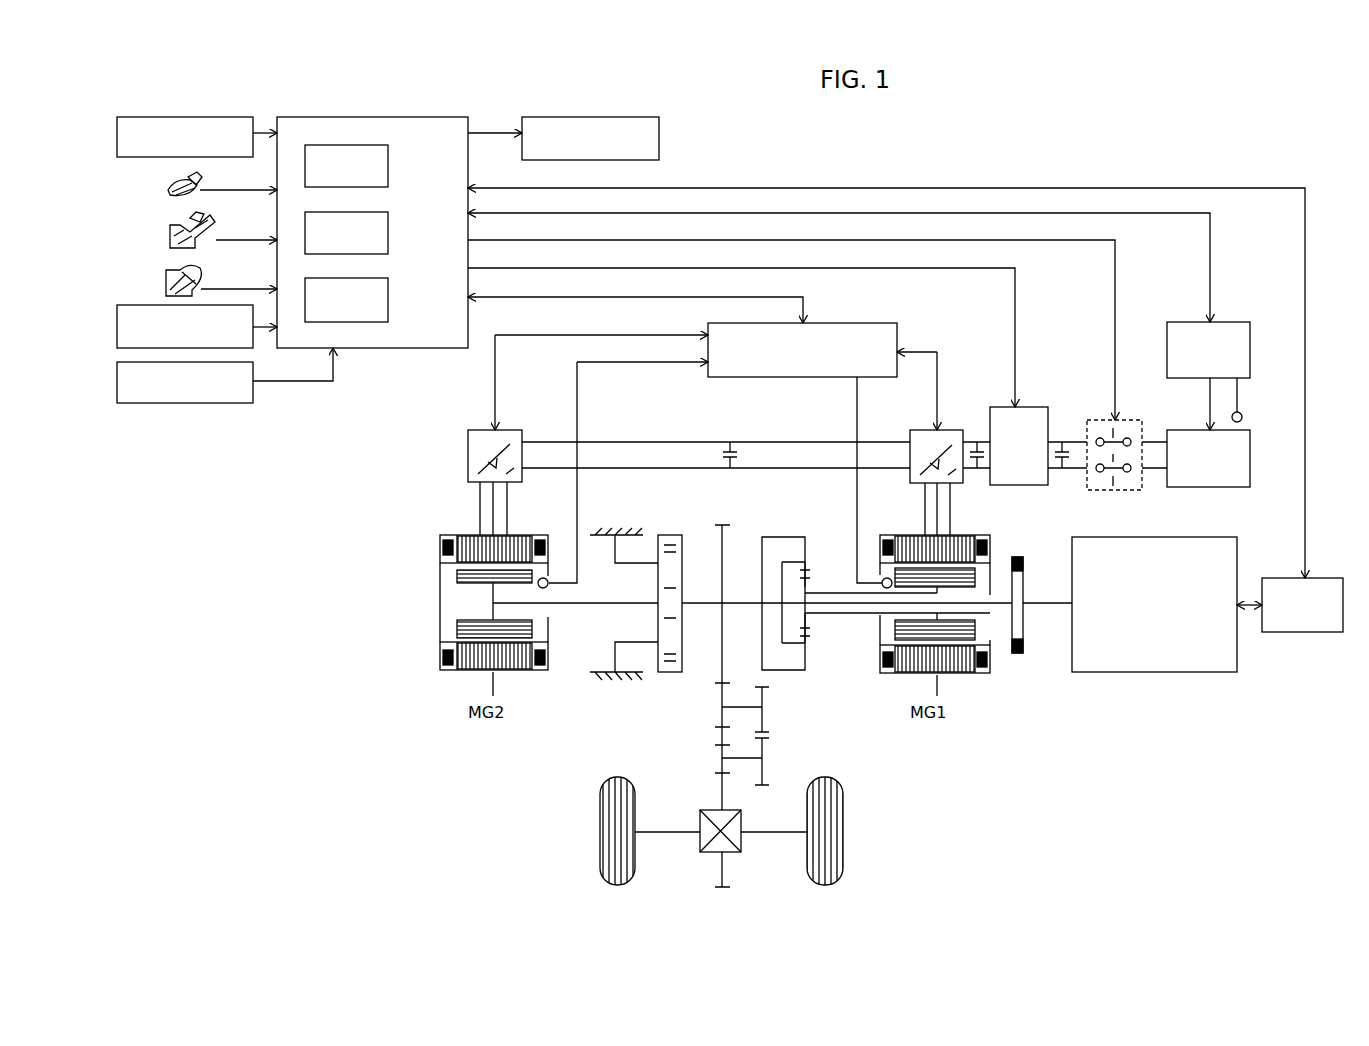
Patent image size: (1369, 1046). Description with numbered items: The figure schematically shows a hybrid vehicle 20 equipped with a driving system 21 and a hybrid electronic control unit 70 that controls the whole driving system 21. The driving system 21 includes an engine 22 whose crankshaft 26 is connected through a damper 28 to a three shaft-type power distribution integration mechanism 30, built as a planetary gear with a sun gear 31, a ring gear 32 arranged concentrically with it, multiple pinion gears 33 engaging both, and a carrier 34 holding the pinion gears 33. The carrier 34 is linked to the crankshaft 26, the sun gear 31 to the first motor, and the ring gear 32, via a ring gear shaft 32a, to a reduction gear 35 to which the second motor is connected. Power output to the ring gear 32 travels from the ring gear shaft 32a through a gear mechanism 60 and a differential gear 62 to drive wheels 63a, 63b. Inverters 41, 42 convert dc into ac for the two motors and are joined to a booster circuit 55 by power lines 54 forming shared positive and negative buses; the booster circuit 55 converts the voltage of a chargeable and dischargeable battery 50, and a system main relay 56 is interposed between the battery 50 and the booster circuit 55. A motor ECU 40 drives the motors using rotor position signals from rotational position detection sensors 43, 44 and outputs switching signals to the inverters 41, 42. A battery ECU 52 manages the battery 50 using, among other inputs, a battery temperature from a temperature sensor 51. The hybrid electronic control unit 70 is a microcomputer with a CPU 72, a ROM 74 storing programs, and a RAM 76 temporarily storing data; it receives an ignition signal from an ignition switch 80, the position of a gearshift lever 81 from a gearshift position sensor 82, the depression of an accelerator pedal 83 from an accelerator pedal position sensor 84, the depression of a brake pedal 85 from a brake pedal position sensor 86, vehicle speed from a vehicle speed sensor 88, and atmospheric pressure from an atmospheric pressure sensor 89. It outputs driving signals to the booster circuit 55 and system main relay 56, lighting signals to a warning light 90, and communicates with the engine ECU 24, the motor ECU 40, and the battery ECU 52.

The hybrid vehicle 20 is at (1115, 135).
The driving system 21 is at (1018, 177).
The engine 22 is at (1153, 672).
The engine ECU 24 is at (1313, 575).
The crankshaft 26 is at (1058, 607).
The damper 28 is at (1018, 655).
The power distribution integration mechanism 30 is at (876, 580).
The sun gear 31 is at (807, 616).
The ring gear 32 is at (807, 663).
The ring gear shaft 32a is at (742, 600).
The pinion gears 33 is at (807, 640).
The carrier 34 is at (787, 560).
The reduction gear 35 is at (667, 525).
The motor ECU 40 is at (842, 321).
The inverter 41 is at (948, 427).
The inverter 42 is at (509, 427).
The rotational position detection sensor 43 is at (880, 540).
The rotational position detection sensor 44 is at (546, 575).
The battery 50 is at (1207, 487).
The temperature sensor 51 is at (1243, 416).
The battery ECU 52 is at (1235, 320).
The power lines 54 is at (796, 450).
The booster circuit 55 is at (1018, 485).
The system main relay 56 is at (1113, 490).
The gear mechanism 60 is at (780, 740).
The differential gear 62 is at (741, 838).
The drive wheel 63a is at (600, 832).
The drive wheel 63b is at (885, 820).
The hybrid electronic control unit 70 is at (372, 117).
The CPU 72 is at (389, 166).
The ROM 74 is at (389, 233).
The RAM 76 is at (389, 300).
The ignition switch 80 is at (117, 132).
The gearshift lever 81 is at (190, 178).
The gearshift position sensor 82 is at (165, 190).
The accelerator pedal 83 is at (198, 220).
The accelerator pedal position sensor 84 is at (168, 240).
The brake pedal 85 is at (193, 268).
The brake pedal position sensor 86 is at (165, 289).
The vehicle speed sensor 88 is at (117, 324).
The atmospheric pressure sensor 89 is at (117, 377).
The warning light 90 is at (660, 138).